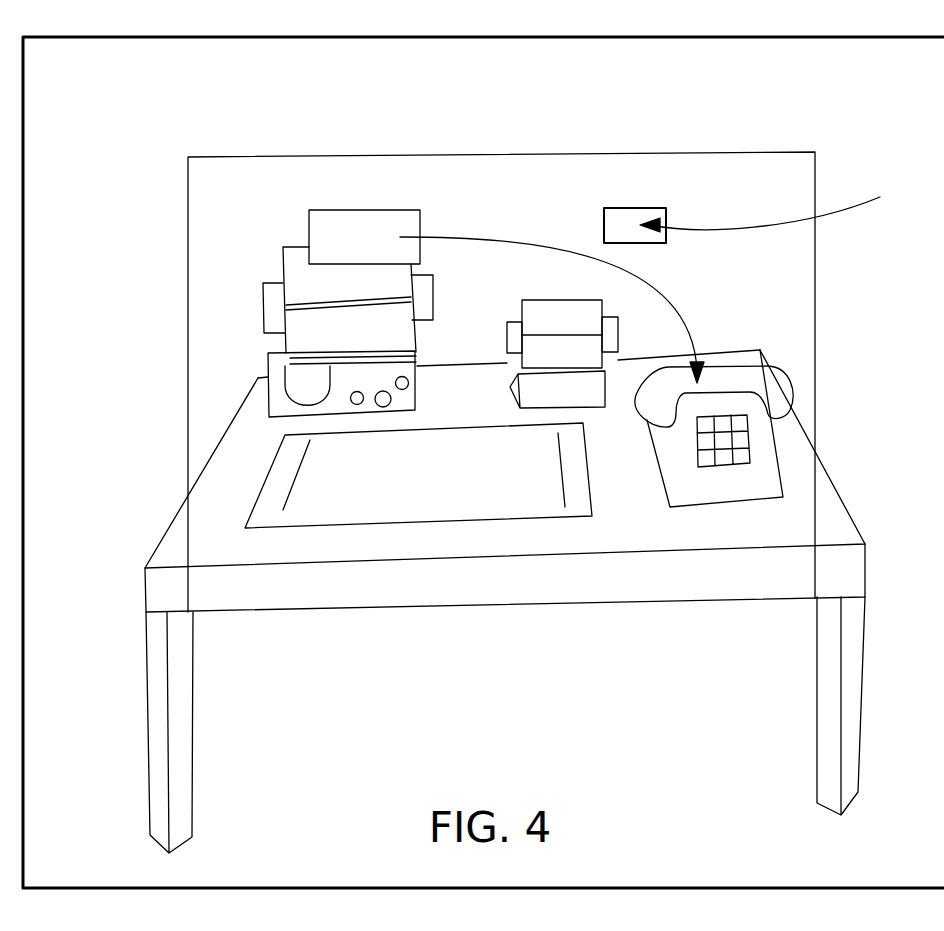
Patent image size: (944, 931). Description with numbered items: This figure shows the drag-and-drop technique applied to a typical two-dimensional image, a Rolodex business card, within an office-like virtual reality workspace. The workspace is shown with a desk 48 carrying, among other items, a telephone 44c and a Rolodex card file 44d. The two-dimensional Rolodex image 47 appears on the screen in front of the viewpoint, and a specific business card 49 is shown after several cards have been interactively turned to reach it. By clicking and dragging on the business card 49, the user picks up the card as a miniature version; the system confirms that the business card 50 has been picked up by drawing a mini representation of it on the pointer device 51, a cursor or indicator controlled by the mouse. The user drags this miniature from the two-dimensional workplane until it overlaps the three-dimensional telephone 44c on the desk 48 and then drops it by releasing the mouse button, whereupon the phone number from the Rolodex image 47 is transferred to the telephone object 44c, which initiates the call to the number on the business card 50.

The telephone 44c is at (763, 462).
The "Rolodex" card file 44d is at (618, 320).
The two-dimensional "Rolodex" image 47 is at (278, 288).
The desk 48 is at (458, 622).
The business card 49 is at (363, 223).
The business card 50 is at (633, 213).
The pointer device 51 is at (658, 278).